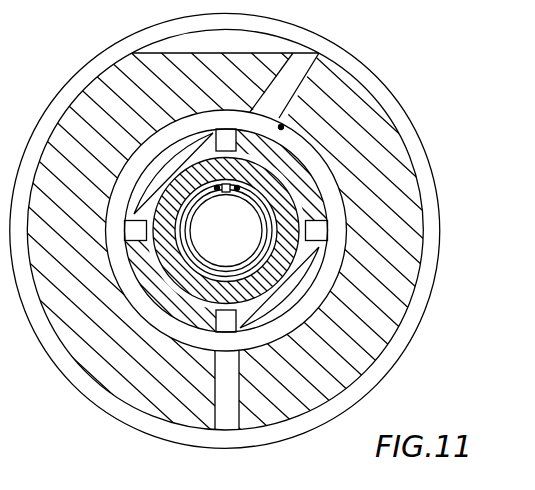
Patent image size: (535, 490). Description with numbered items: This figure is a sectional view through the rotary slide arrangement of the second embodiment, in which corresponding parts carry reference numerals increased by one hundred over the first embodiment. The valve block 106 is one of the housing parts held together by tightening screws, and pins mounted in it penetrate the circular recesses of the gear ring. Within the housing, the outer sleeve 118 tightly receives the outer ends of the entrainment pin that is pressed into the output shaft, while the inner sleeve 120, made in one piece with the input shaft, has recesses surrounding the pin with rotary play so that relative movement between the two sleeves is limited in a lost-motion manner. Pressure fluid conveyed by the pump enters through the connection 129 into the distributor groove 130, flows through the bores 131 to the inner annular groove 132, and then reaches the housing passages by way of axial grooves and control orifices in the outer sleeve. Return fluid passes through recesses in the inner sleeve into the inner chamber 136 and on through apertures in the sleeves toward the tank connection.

The valve block 106 is at (407, 113).
The outer sleeve 118 is at (308, 182).
The inner sleeve 120 is at (310, 207).
The connection 129 is at (220, 413).
The distributor groove 130 is at (283, 126).
The bores 131 is at (230, 322).
The inner annular groove 132 is at (242, 310).
The inner chamber 136 is at (250, 253).